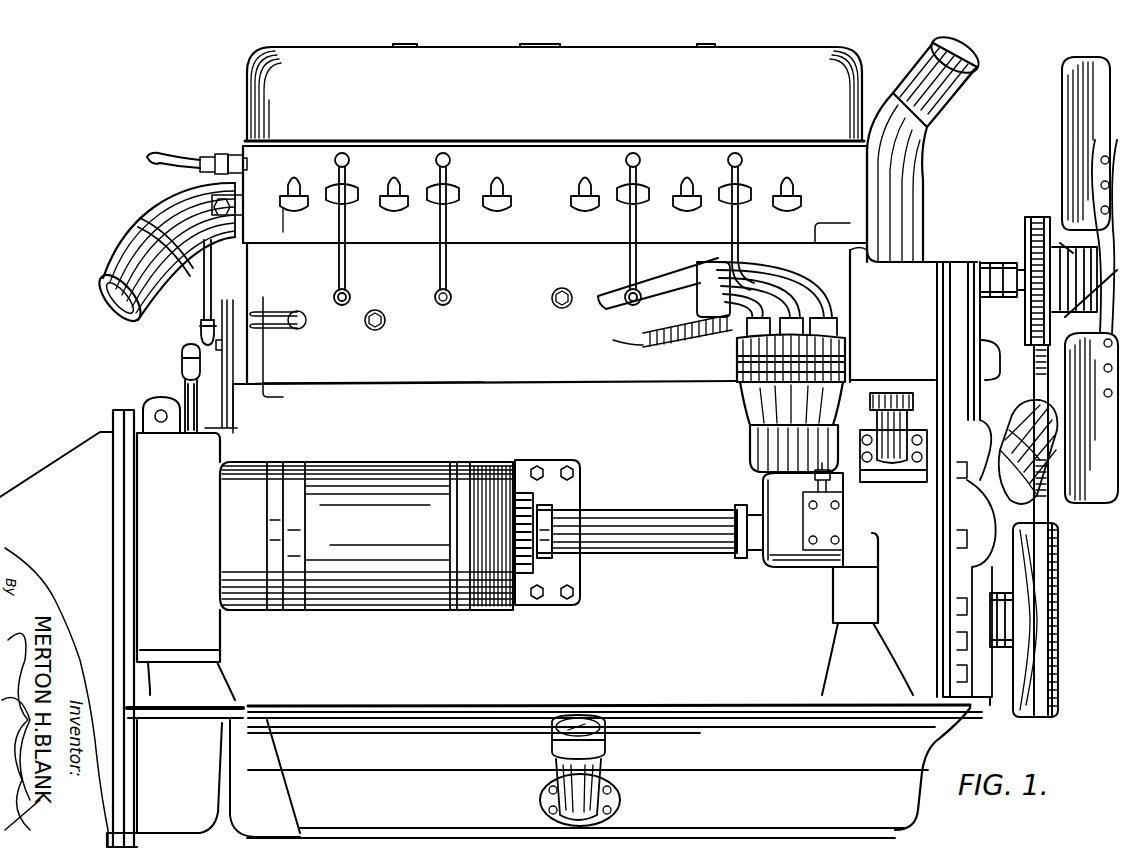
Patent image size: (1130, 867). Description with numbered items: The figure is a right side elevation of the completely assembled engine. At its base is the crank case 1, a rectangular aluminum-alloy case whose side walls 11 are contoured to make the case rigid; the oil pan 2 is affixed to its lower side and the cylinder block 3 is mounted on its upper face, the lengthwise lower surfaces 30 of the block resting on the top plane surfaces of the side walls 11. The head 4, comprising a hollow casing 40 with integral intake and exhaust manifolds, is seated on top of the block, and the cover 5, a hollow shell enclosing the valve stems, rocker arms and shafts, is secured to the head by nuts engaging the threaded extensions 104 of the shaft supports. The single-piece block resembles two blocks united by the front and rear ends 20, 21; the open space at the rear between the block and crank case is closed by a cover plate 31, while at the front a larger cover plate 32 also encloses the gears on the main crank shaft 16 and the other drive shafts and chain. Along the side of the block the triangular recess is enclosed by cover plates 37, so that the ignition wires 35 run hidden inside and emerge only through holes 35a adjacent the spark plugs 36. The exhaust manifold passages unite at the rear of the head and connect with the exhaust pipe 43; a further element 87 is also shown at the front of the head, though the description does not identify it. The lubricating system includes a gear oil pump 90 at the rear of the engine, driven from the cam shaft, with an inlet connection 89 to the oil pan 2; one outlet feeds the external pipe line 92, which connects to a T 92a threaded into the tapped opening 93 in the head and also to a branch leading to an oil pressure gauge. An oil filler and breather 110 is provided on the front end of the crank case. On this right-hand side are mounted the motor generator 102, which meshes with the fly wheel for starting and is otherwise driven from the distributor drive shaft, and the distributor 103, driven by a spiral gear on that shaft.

The crank case 1 is at (553, 554).
The oil pan 2 is at (559, 771).
The cylinder block 3 is at (254, 289).
The head 4 is at (561, 204).
The cover 5 is at (554, 92).
The side walls 11 is at (444, 422).
The main crank shaft 16 is at (995, 590).
The front end of block 20 is at (870, 250).
The rear end of block 21 is at (266, 378).
The lower surfaces of the block 30 is at (484, 383).
The cover plate 31 is at (202, 331).
The cover plate 32 is at (953, 275).
The ignition wires 35 is at (448, 233).
The holes 35a is at (453, 298).
The spark plugs 36 is at (450, 180).
The cover plates 37 is at (469, 320).
The hollow casing 40 is at (419, 192).
The exhaust pipe 43 is at (150, 226).
The water outlet pipe 87 is at (935, 108).
The inlet connection 89 is at (182, 352).
The gear oil pump 90 is at (232, 405).
The pipe line 92 is at (204, 304).
The T 92a is at (220, 156).
The tapped opening 93 is at (240, 154).
The motor generator 102 is at (405, 612).
The distributor 103 is at (742, 430).
The threaded extensions 104 is at (668, 552).
The oil filler and breather 110 is at (895, 394).